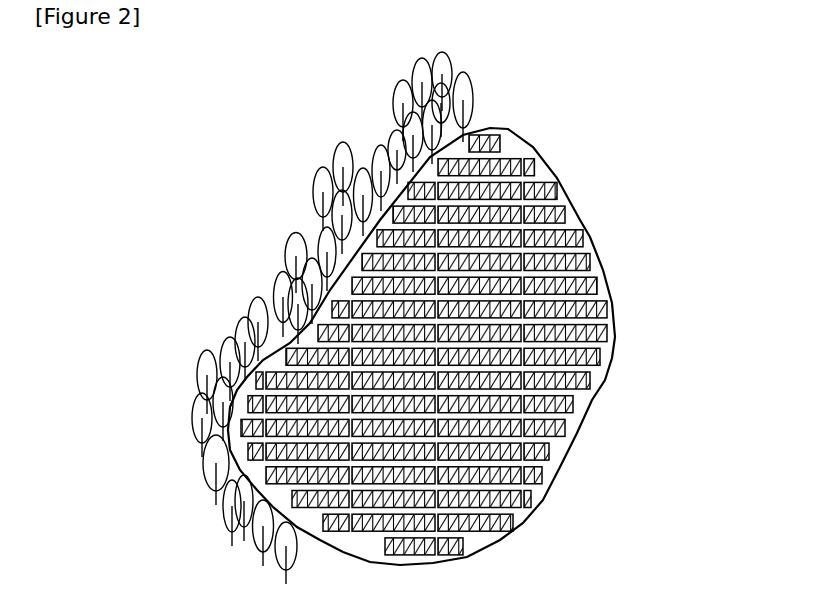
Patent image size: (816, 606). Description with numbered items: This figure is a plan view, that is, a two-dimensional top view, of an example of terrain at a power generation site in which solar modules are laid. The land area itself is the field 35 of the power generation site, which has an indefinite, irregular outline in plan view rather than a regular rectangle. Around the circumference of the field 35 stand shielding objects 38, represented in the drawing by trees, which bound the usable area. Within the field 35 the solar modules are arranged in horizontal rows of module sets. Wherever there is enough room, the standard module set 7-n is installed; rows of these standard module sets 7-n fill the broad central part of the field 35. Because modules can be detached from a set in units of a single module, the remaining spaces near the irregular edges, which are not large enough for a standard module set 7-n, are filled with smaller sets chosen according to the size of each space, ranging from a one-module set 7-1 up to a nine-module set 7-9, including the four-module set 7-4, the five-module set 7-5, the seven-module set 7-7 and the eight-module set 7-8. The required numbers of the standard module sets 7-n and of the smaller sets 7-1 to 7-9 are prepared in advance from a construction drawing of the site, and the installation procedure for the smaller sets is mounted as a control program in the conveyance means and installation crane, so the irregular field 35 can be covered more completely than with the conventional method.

The field of the power generation site 35 is at (601, 433).
The shielding objects 38 is at (340, 163).
The one-module set 7-1 is at (537, 166).
The four-module set 7-4 is at (498, 128).
The five-module set 7-5 is at (567, 217).
The seven-module set 7-7 is at (585, 240).
The eight-module set 7-8 is at (595, 263).
The nine-module set 7-9 is at (597, 288).
The standard module set 7-n is at (507, 162).